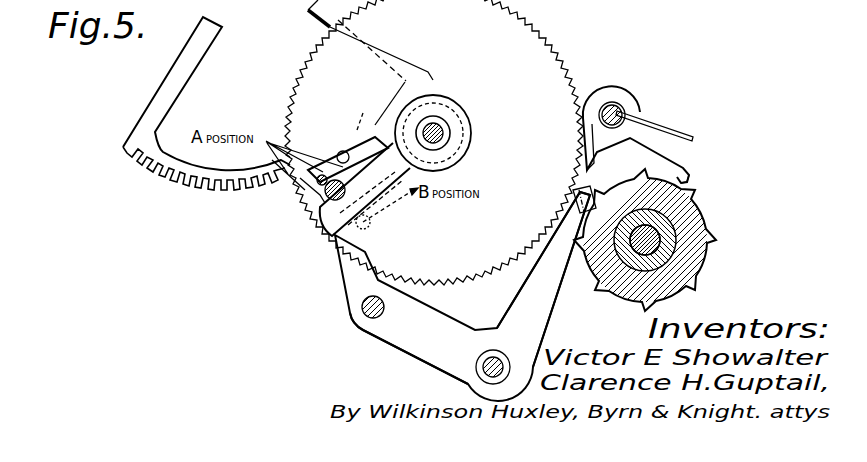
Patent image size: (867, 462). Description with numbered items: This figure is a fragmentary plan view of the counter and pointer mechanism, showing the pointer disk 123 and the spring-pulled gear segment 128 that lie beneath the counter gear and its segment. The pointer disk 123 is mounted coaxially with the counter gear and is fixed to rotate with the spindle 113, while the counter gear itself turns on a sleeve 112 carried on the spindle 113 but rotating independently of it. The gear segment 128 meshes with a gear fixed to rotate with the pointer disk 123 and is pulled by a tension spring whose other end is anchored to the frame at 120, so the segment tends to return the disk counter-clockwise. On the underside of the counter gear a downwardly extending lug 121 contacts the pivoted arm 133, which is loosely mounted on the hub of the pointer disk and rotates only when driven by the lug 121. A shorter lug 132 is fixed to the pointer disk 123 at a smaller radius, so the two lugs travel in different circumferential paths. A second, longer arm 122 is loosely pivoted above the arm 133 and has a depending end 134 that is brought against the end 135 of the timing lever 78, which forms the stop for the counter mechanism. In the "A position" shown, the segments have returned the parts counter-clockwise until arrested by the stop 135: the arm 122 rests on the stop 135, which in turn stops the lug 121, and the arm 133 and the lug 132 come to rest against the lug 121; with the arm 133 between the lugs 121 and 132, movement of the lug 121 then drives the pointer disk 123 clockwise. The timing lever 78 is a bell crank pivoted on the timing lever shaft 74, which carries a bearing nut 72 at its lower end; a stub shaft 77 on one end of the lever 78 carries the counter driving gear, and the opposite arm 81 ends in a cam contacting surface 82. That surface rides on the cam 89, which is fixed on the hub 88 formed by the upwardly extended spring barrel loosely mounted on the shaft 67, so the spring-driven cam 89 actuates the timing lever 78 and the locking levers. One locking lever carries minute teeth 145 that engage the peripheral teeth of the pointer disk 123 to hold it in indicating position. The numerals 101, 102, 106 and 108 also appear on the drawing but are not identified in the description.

The gear segment 128 is at (198, 53).
The pointer disk 123 is at (540, 40).
The frame anchor 120 is at (462, 108).
The spindle 113 is at (443, 135).
The sleeve 112 is at (441, 147).
The pivoted arm 133 is at (369, 114).
The lug 132 is at (342, 152).
The lug 121 is at (318, 217).
The depending end 134 is at (323, 227).
The stop arm 135 is at (335, 239).
The second arm 122 is at (343, 231).
The minute teeth 145 is at (572, 193).
The pivot pin 102 is at (619, 108).
The pawl arm 108 is at (655, 143).
The spring 101 is at (688, 131).
The pawl tooth 106 is at (690, 182).
The cam contacting surface 82 is at (618, 198).
The hub 88 is at (697, 208).
The shaft 67 is at (672, 236).
The cam 89 is at (694, 258).
The opposite arm 81 is at (547, 317).
The timing lever 78 is at (420, 314).
The stub shaft 77 is at (362, 307).
The timing lever shaft 74 is at (481, 358).
The bearing nut 72 is at (390, 345).